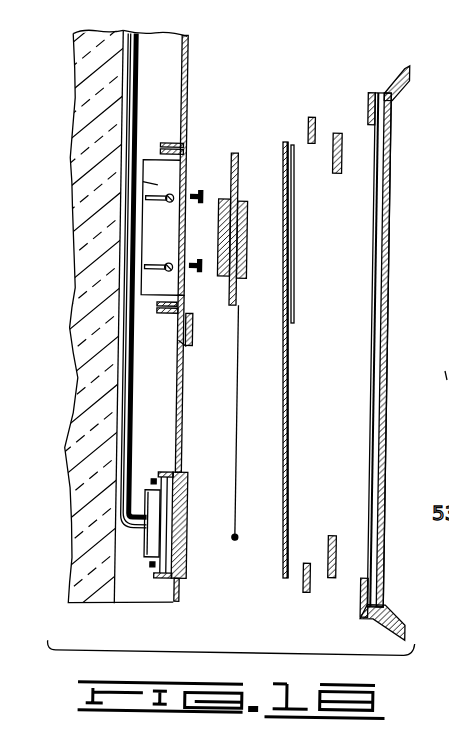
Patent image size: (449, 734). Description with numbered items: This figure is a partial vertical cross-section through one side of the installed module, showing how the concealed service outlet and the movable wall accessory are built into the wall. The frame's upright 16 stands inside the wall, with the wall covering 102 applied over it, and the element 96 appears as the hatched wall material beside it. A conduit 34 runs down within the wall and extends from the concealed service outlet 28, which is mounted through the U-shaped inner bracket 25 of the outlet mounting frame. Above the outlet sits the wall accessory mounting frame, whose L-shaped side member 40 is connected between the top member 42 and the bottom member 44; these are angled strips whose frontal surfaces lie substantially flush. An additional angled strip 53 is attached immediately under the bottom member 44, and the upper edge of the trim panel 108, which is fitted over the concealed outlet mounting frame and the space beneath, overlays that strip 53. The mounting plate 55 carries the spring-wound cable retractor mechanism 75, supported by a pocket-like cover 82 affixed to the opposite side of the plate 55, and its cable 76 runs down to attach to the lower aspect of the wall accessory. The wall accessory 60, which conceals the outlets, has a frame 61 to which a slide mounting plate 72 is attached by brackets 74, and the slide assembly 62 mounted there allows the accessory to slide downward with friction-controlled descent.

The upright 16 is at (152, 409).
The U-shaped inner bracket 25 is at (142, 494).
The concealed service outlet 28 is at (185, 503).
The conduit 34 is at (136, 79).
The L-shaped side member 40 is at (114, 172).
The top member 42 is at (179, 149).
The bottom member 44 is at (185, 296).
The additional angled strip 53 is at (176, 324).
The mounting plate 55 is at (235, 170).
The wall accessory 60 is at (390, 188).
The wall accessory frame 61 is at (392, 75).
The slide assembly 62 is at (295, 420).
The slide mounting plate 72 is at (334, 131).
The bracket 74 is at (308, 118).
The spring-wound cable retractor mechanism 75 is at (245, 235).
The cable 76 is at (237, 388).
The pocket-like cover 82 is at (217, 248).
The wall 96 is at (86, 130).
The wall covering 102 is at (186, 90).
The trim panel 108 is at (186, 436).